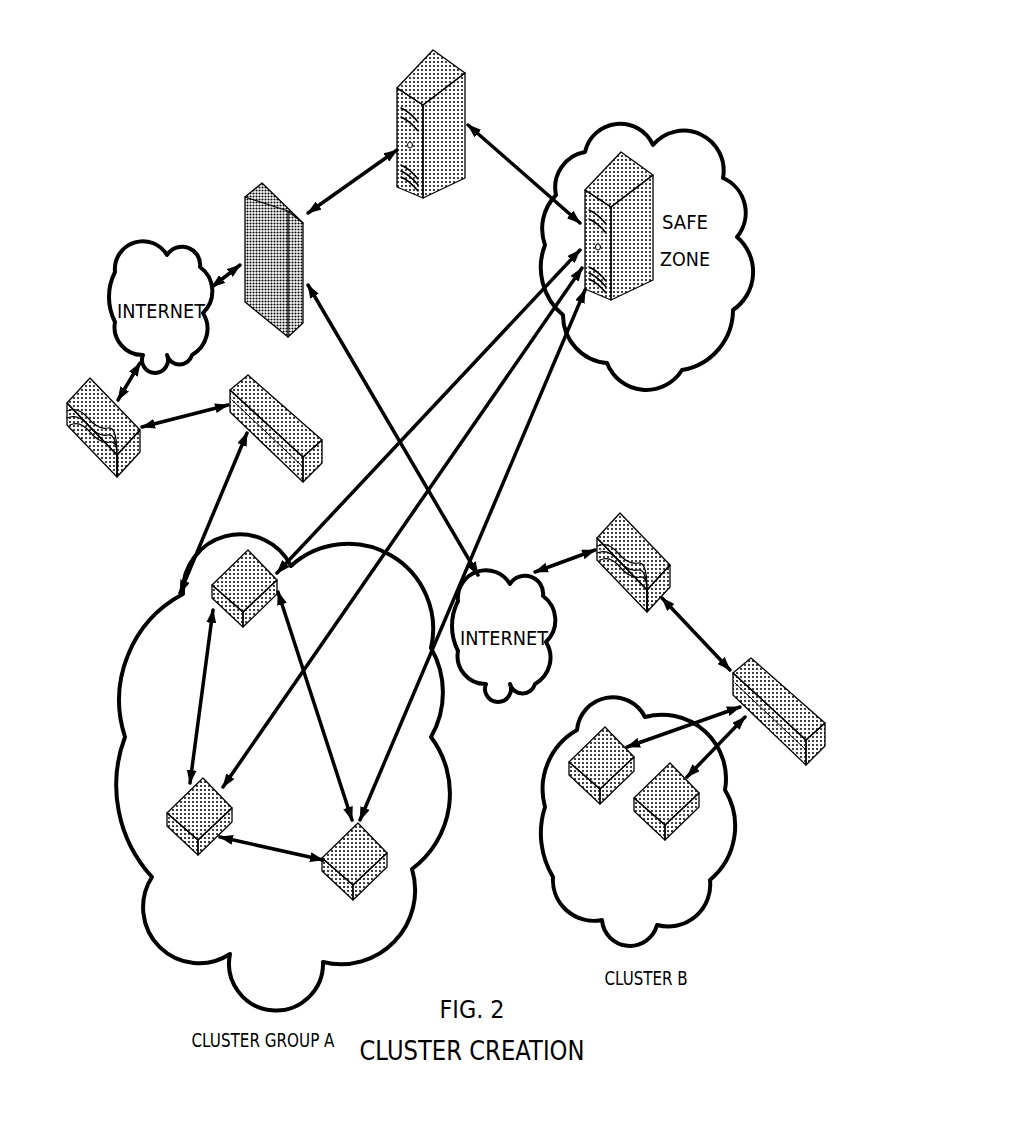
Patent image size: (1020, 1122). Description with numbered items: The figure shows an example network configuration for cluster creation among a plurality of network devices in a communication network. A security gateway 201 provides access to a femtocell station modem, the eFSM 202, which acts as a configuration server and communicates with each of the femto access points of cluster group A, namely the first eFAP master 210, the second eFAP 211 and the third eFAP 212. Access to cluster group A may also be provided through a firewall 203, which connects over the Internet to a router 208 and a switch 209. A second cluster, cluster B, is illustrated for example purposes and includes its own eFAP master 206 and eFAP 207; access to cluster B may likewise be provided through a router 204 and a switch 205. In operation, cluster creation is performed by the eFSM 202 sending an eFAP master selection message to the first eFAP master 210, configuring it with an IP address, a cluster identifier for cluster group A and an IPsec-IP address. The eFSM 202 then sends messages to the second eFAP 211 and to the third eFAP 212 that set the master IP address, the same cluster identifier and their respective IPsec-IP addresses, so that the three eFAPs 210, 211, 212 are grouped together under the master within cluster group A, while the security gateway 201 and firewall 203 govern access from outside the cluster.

The security gateway 201 is at (432, 142).
The femtocell station modem (eFSM) 202 is at (619, 247).
The firewall 203 is at (275, 278).
The router 204 is at (633, 581).
The switch 205 is at (779, 729).
The eFAP master 206 is at (601, 813).
The eFAP 207 is at (666, 834).
The router 208 is at (103, 445).
The switch 209 is at (276, 446).
The eFAP #1 master 210 is at (245, 636).
The eFAP #2 211 is at (199, 850).
The eFAP #3 212 is at (354, 895).